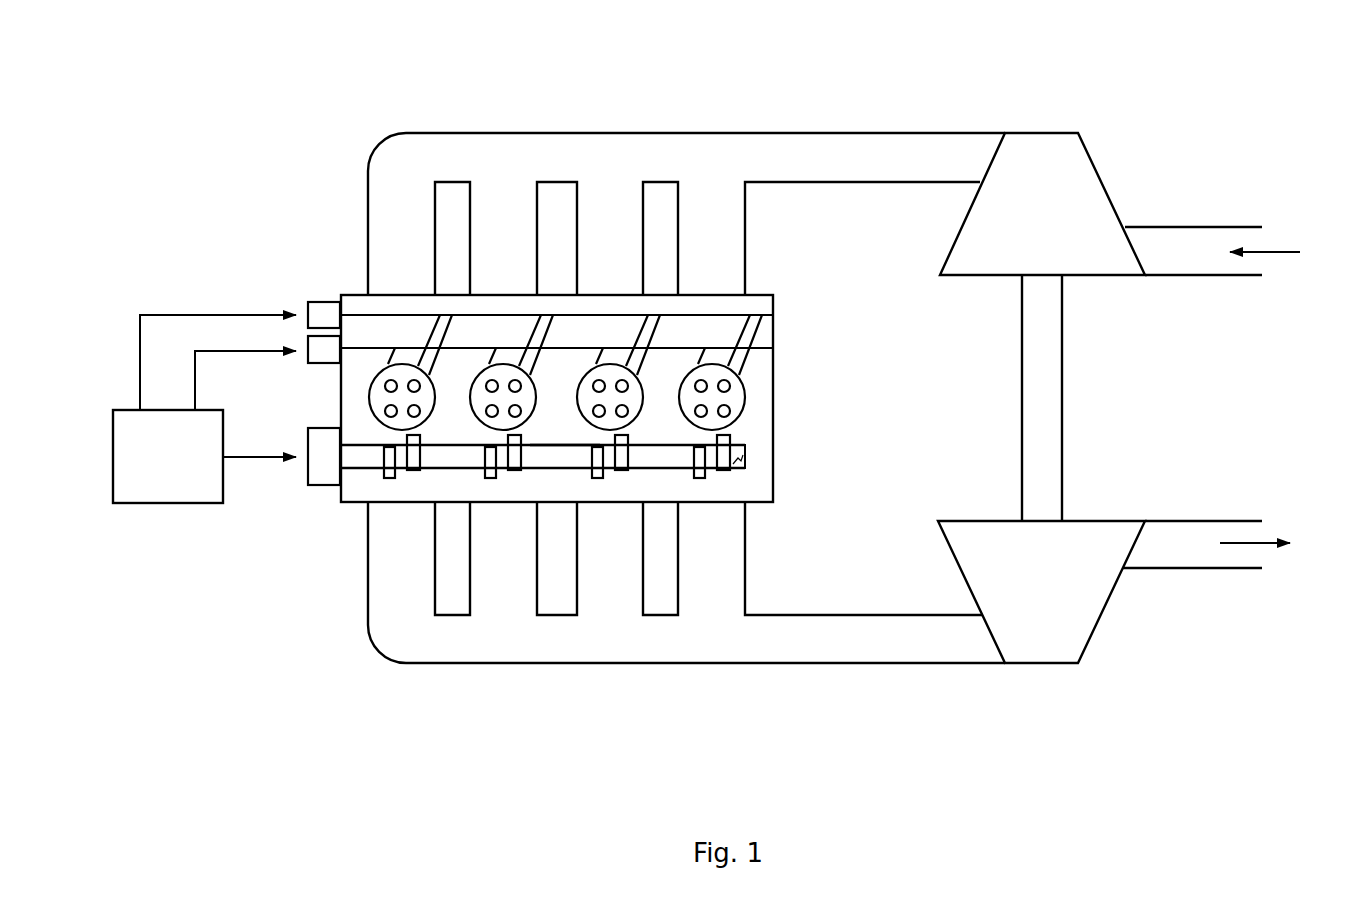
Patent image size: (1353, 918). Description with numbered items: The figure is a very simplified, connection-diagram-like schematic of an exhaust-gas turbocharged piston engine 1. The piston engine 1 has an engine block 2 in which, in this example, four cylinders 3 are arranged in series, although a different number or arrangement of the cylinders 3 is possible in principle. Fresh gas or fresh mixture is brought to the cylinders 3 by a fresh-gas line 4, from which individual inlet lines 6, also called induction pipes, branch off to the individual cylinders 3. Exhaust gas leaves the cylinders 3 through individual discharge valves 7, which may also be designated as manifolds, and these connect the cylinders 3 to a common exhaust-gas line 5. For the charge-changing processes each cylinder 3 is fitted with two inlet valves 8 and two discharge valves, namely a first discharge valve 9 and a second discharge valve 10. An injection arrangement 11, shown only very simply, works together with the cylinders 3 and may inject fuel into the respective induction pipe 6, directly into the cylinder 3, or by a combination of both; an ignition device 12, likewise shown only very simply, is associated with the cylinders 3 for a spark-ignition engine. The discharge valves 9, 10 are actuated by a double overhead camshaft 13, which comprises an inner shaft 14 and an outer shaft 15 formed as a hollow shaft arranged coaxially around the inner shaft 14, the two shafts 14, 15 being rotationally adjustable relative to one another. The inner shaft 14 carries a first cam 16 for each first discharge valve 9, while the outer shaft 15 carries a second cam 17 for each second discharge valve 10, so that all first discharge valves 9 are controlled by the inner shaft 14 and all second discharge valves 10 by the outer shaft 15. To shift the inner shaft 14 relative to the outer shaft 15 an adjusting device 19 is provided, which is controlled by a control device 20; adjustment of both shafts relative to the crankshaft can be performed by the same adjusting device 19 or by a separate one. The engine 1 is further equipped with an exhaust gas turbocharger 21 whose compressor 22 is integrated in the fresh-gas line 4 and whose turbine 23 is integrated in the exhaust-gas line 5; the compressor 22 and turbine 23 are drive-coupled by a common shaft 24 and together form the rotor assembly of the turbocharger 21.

The piston engine 1 is at (342, 291).
The engine block 2 is at (767, 393).
The cylinder 3 is at (435, 388).
The fresh-gas line 4 is at (893, 133).
The exhaust-gas line 5 is at (1190, 570).
The inlet line 6 is at (720, 257).
The discharge valve 7 is at (720, 578).
The inlet valve 8 is at (726, 382).
The first discharge valve 9 is at (727, 413).
The second discharge valve 10 is at (704, 413).
The injection arrangement 11 is at (310, 305).
The ignition device 12 is at (310, 360).
The double overhead camshaft 13 is at (362, 472).
The inner shaft 14 is at (742, 460).
The outer shaft 15 is at (562, 460).
The first cam 16 is at (723, 465).
The second cam 17 is at (698, 470).
The adjusting device 19 is at (315, 470).
The control device 20 is at (151, 471).
The exhaust gas turbocharger 21 is at (1060, 368).
The compressor 22 is at (1029, 226).
The turbine 23 is at (1029, 599).
The common shaft 24 is at (1065, 398).